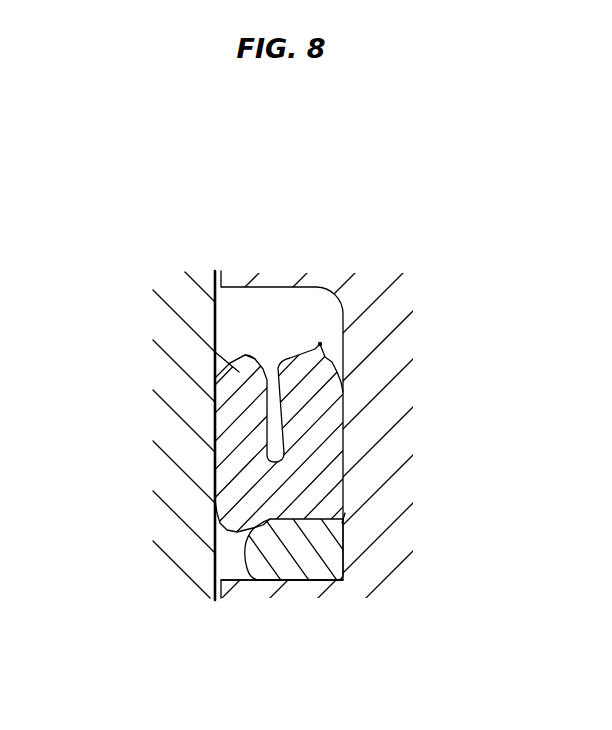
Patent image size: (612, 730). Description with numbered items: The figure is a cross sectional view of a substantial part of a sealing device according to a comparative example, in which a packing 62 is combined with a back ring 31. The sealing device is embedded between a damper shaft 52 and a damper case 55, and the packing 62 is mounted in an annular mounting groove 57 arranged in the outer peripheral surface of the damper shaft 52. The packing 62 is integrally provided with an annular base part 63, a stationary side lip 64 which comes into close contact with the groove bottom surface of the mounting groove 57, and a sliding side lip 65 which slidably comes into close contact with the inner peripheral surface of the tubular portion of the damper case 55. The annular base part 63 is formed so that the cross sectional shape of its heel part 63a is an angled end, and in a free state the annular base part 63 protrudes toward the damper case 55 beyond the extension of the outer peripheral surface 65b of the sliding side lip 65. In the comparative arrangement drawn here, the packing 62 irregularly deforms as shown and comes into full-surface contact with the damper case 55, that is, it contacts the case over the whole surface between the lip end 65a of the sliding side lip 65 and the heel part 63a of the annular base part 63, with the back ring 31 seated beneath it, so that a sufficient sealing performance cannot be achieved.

The back ring 31 is at (309, 581).
The damper shaft 52 is at (372, 582).
The damper case 55 is at (190, 570).
The mounting groove 57 is at (278, 319).
The packing 62 is at (320, 344).
The annular base part 63 is at (258, 527).
The heel part 63a is at (220, 522).
The stationary side lip 64 is at (328, 362).
The sliding side lip 65 is at (215, 352).
The lip end 65a is at (215, 384).
The outer peripheral surface 65b is at (215, 423).